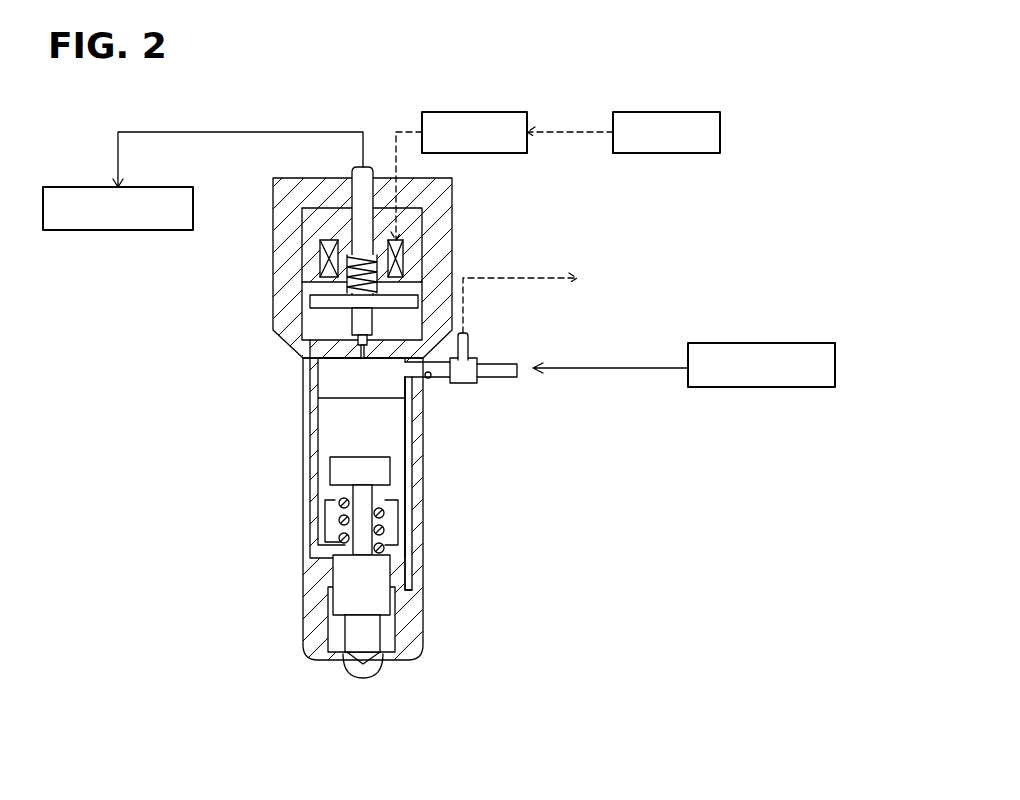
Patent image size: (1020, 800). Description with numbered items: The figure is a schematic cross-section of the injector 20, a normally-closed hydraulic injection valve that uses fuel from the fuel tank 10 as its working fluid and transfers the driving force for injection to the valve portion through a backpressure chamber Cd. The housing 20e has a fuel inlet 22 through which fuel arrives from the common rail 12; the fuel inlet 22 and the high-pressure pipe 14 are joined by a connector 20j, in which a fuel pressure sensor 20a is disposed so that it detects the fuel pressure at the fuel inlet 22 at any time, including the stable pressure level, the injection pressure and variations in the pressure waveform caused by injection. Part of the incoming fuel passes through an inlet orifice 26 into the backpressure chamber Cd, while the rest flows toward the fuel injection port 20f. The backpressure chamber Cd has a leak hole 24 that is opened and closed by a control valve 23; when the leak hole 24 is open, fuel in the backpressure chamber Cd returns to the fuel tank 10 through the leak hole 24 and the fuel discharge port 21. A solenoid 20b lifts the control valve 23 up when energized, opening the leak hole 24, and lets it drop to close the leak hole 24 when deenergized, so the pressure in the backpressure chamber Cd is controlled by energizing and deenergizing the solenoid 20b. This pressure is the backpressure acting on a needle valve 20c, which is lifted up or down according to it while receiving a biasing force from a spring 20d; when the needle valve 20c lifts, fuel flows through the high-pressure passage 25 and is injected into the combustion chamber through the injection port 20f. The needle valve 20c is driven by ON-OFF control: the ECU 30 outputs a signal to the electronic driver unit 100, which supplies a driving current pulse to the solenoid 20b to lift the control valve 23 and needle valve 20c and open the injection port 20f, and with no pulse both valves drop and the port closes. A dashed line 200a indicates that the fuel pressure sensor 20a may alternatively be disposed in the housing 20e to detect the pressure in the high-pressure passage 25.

The fuel tank 10 is at (88, 185).
The common rail 12 is at (740, 343).
The high-pressure pipe 14 is at (515, 383).
The injector 20 is at (529, 206).
The fuel pressure sensor 20a is at (475, 350).
The solenoid 20b is at (323, 246).
The needle valve 20c is at (338, 583).
The spring 20d is at (343, 517).
The housing 20e is at (452, 252).
The fuel injection port 20f is at (380, 664).
The connector 20j is at (473, 383).
The fuel discharge port 21 is at (367, 167).
The fuel inlet 22 is at (433, 377).
The control valve 23 is at (335, 303).
The leak hole 24 is at (345, 334).
The high-pressure passage 25 is at (417, 577).
The inlet orifice 26 is at (410, 364).
The ECU 30 is at (672, 112).
The electronic driver unit 100 is at (473, 112).
The dashed line 200a is at (420, 513).
The backpressure chamber Cd is at (321, 381).